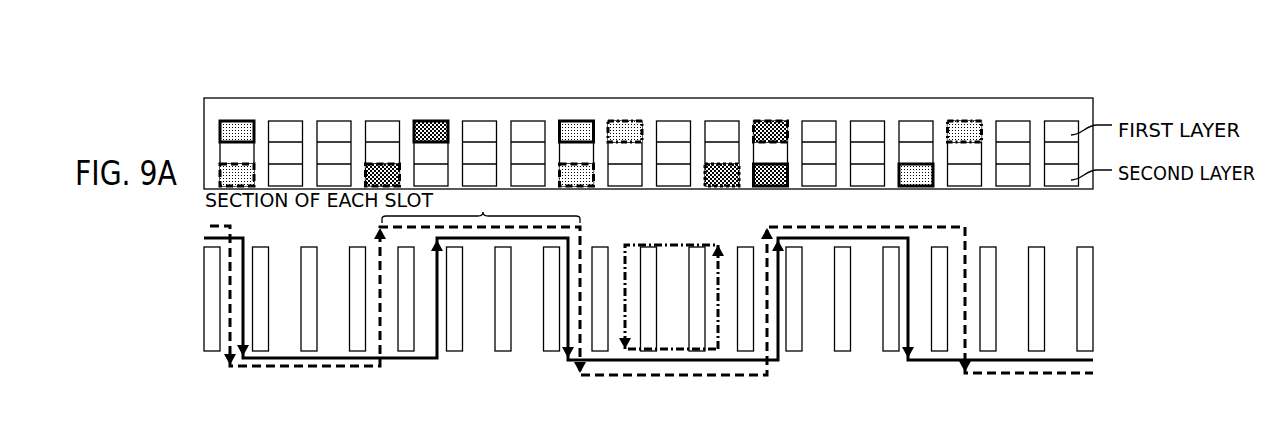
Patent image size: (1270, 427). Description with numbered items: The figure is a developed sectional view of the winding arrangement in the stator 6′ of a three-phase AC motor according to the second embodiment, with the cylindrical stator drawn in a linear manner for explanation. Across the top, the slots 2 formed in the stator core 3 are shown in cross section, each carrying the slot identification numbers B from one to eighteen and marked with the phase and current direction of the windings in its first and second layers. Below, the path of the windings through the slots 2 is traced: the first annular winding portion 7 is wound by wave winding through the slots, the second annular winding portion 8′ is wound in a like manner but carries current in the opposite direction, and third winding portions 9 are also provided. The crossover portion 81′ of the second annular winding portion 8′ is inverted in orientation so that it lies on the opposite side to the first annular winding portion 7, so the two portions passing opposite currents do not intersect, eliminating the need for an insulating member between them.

The slots 2 is at (529, 348).
The stator core 3 is at (508, 103).
The stator 6′ is at (744, 82).
The first annular winding portion 7 is at (297, 362).
The second annular winding portion 8′ is at (365, 370).
The crossover portion 81′ is at (481, 206).
The third winding portions 9 is at (672, 349).
The slot identification numbers B is at (643, 103).